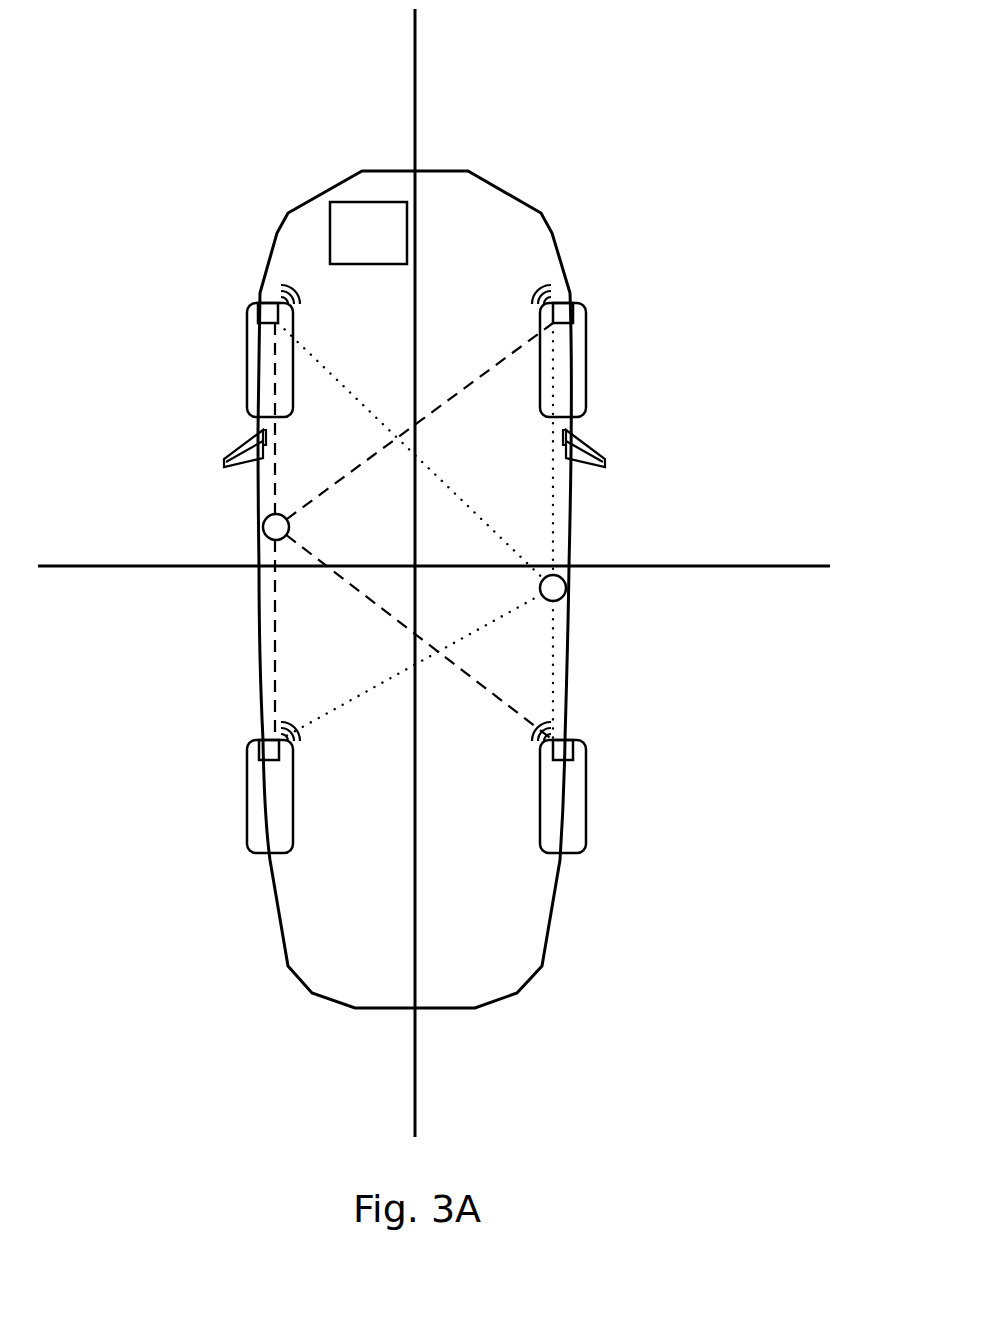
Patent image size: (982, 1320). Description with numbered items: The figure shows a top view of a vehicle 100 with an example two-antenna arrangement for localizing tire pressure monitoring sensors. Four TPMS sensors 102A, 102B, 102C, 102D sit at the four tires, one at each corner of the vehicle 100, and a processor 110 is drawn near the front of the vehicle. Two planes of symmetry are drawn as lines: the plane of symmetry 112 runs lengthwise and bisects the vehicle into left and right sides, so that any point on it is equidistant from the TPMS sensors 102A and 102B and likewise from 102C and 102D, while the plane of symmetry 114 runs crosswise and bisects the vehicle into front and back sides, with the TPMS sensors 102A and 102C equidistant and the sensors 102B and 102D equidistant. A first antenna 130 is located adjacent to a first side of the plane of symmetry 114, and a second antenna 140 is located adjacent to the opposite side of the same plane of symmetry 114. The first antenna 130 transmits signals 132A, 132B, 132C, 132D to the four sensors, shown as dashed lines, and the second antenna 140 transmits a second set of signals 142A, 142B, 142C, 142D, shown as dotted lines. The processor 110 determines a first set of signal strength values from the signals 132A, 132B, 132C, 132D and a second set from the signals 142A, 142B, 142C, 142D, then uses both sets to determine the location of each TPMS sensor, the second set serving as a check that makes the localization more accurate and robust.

The vehicle 100 is at (414, 171).
The processor 110 is at (368, 233).
The plane of symmetry 112 is at (415, 1100).
The plane of symmetry 114 is at (814, 566).
The TPMS sensor 102A is at (257, 310).
The TPMS sensor 102B is at (575, 310).
The TPMS sensor 102C is at (257, 750).
The TPMS sensor 102D is at (575, 750).
The first antenna 130 is at (263, 528).
The second antenna 140 is at (568, 590).
The signal 132A is at (226, 455).
The signal 132B is at (312, 500).
The signal 132C is at (273, 578).
The signal 132D is at (370, 602).
The signal 142A is at (455, 495).
The signal 142B is at (555, 520).
The signal 142C is at (485, 625).
The signal 142D is at (553, 690).